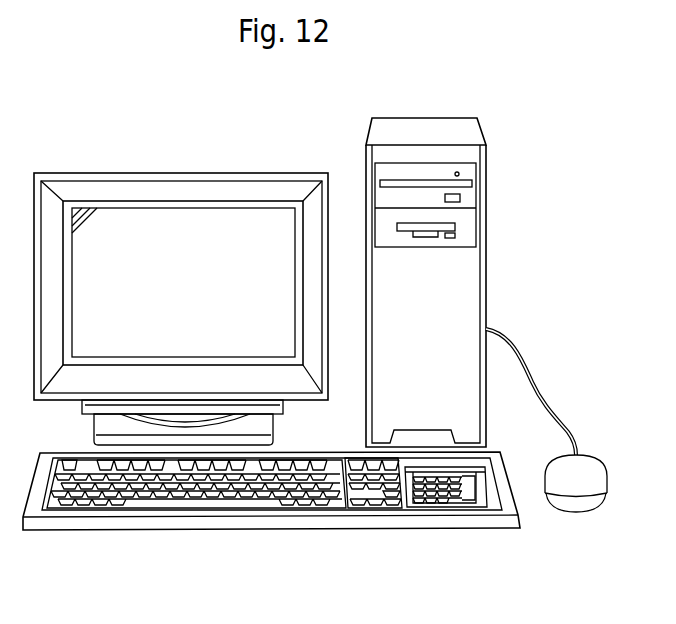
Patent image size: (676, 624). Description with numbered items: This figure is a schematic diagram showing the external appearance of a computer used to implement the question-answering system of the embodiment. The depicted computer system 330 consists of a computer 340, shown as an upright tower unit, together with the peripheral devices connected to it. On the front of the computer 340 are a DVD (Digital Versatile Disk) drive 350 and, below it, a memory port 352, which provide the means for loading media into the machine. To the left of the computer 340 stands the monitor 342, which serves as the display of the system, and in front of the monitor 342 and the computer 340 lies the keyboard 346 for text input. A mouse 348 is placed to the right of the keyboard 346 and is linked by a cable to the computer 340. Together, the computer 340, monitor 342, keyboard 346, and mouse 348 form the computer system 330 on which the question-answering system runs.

The computer system 330 is at (546, 85).
The computer 340 is at (480, 118).
The monitor 342 is at (310, 172).
The keyboard 346 is at (510, 470).
The mouse 348 is at (607, 463).
The DVD drive 350 is at (487, 184).
The memory port 352 is at (460, 228).